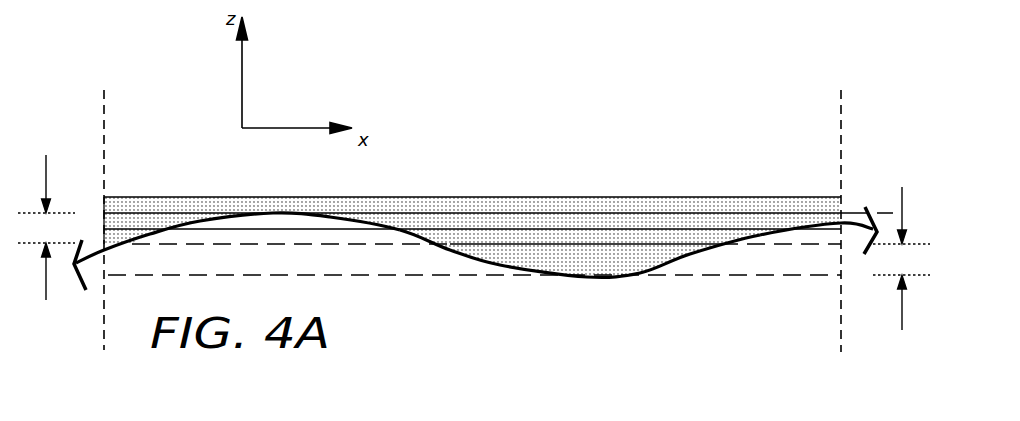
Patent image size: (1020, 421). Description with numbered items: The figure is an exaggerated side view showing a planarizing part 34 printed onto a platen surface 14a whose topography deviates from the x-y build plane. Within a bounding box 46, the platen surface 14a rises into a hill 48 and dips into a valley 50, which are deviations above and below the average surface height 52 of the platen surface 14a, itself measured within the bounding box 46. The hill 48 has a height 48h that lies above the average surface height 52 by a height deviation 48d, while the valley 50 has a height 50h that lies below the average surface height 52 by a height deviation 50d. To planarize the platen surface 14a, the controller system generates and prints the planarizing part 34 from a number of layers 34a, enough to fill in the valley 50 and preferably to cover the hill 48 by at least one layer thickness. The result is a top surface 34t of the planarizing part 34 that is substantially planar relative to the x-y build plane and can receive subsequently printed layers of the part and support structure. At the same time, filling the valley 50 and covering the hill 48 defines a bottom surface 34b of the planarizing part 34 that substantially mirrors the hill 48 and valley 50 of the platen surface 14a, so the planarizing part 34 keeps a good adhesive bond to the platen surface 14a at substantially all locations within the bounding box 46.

The platen surface 14a is at (475, 229).
The planarizing part 34 is at (472, 217).
The layers of film 34a is at (573, 238).
The bottom surface 34b is at (448, 248).
The top surface 34t is at (703, 196).
The bounding box 46 is at (103, 138).
The hill 48 is at (258, 200).
The height deviation 48d is at (47, 290).
The height 48h is at (880, 212).
The valley 50 is at (672, 280).
The height deviation 50d is at (902, 318).
The height 50h is at (500, 277).
The average surface height 52 is at (620, 244).